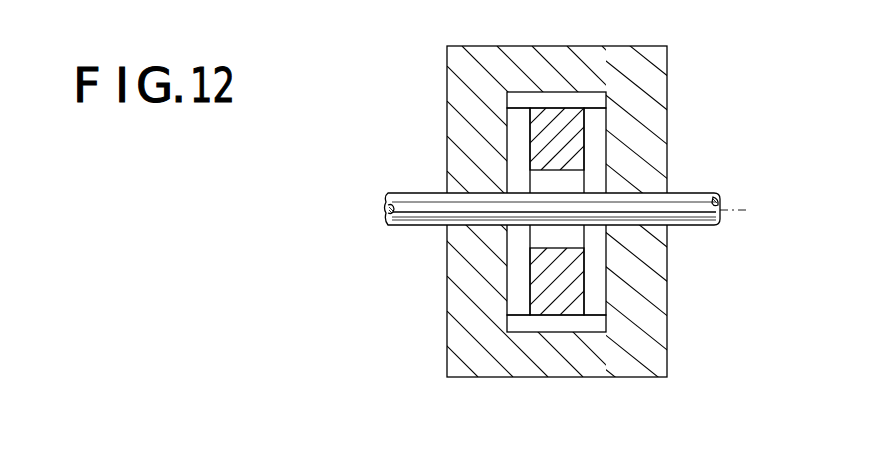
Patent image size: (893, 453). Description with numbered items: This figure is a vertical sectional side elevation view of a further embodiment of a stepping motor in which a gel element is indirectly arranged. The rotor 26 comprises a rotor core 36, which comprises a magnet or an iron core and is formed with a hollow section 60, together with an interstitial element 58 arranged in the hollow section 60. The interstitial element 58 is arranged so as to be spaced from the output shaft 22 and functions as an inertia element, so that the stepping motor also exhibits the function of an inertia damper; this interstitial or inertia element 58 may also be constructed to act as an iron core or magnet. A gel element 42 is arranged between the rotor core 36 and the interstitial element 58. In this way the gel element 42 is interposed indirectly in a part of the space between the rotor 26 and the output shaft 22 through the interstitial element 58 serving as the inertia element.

The output shaft 22 is at (690, 203).
The rotor 26 is at (432, 107).
The rotor core 36 is at (650, 92).
The gel element 42 is at (545, 92).
The interstitial element 58 is at (537, 273).
The hollow section 60 is at (600, 272).